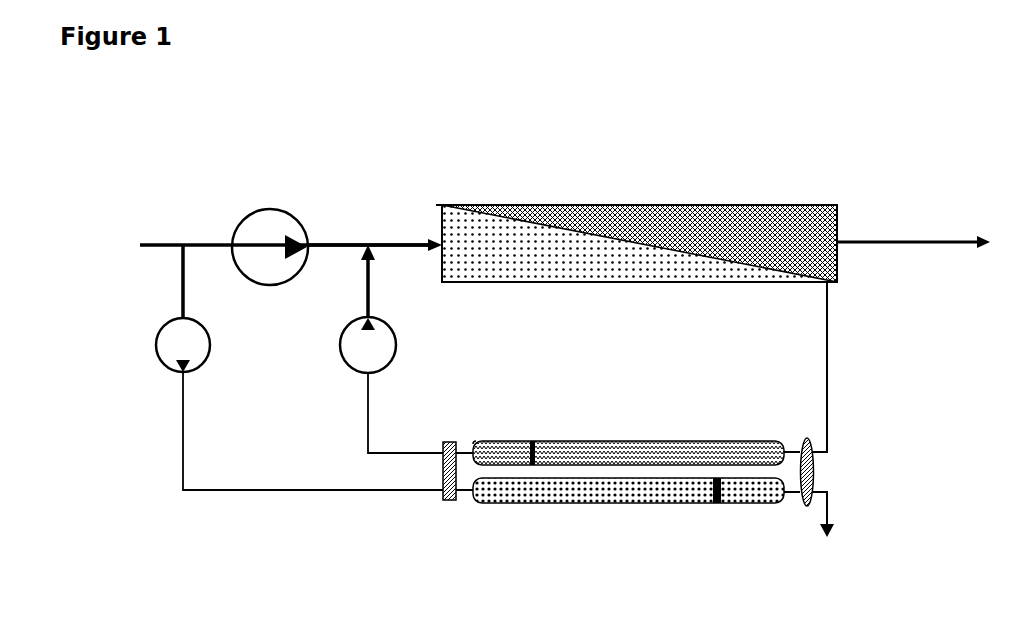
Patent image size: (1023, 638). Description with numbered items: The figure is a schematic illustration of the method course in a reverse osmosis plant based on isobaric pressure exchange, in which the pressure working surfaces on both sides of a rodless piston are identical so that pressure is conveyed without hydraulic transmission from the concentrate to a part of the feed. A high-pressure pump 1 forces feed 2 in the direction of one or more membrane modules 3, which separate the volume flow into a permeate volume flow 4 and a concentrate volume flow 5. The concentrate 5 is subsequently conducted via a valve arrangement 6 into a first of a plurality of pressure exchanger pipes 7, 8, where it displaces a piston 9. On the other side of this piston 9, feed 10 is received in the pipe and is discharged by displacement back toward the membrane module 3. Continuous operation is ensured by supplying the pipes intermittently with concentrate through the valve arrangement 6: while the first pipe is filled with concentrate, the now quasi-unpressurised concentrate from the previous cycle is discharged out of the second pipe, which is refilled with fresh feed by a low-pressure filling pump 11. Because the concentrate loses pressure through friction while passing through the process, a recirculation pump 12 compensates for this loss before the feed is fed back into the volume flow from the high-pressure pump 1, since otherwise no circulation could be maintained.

The high-pressure pump 1 is at (268, 228).
The feed 2 is at (330, 240).
The membrane module 3 is at (682, 207).
The permeate volume flow 4 is at (907, 242).
The concentrate volume flow 5 is at (827, 355).
The valve arrangement 6 is at (827, 472).
The pressure exchanger pipe 7 is at (703, 430).
The pressure exchanger pipe 8 is at (695, 508).
The piston 9 is at (532, 448).
The feed 10 is at (492, 441).
The low-pressure filling pump 11 is at (180, 347).
The recirculation pump 12 is at (360, 348).